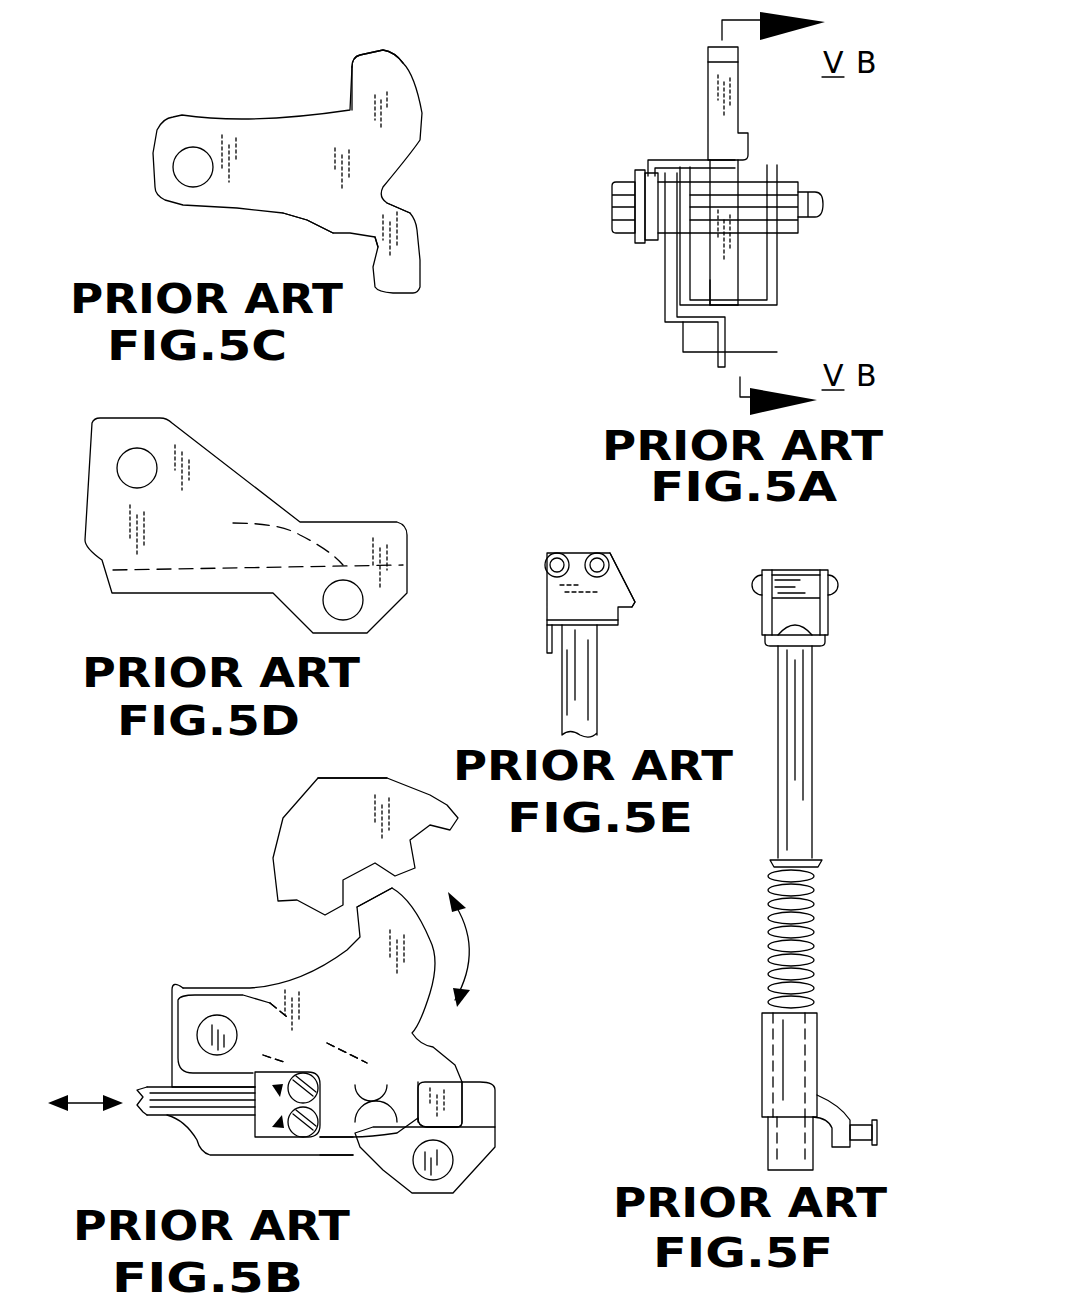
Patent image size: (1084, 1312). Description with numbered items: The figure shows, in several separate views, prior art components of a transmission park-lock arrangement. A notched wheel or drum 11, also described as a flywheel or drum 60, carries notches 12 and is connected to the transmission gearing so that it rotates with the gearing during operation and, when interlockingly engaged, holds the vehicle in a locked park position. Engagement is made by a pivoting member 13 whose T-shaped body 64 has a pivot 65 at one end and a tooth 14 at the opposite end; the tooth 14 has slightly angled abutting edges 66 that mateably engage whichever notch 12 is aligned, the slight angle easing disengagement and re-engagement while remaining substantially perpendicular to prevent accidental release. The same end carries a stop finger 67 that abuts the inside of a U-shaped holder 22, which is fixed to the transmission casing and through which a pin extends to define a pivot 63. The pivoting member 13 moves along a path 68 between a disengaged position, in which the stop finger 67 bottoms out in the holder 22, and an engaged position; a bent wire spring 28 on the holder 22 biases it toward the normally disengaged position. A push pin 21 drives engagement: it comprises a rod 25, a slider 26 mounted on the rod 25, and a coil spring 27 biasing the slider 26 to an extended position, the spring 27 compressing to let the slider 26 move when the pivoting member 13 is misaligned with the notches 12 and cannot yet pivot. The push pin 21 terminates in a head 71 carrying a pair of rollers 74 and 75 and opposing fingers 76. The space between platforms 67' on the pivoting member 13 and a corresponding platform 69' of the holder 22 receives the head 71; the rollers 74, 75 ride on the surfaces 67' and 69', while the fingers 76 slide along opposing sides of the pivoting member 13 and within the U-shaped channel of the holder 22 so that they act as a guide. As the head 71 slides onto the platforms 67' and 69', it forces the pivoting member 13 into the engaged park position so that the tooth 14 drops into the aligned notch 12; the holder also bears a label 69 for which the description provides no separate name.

In FIG. 5B, the notched wheel or drum 11 is at (258, 865).
In FIG. 5B, the notch 12 is at (420, 840).
In FIG. 5A, the pivoting member 13 is at (742, 100).
In FIG. 5B, the pivoting member 13 is at (440, 1003).
In FIG. 5C, the pivoting member 13 is at (435, 110).
In FIG. 5A, the tooth 14 is at (708, 50).
In FIG. 5B, the tooth 14 is at (410, 902).
In FIG. 5C, the tooth 14 is at (378, 68).
In FIG. 5B, the push pin 21 is at (150, 1122).
In FIG. 5E, the push pin 21 is at (550, 699).
In FIG. 5F, the push pin 21 is at (820, 714).
In FIG. 5A, the holder 22 is at (777, 320).
In FIG. 5B, the holder 22 is at (488, 1180).
In FIG. 5D, the holder 22 is at (248, 455).
In FIG. 5F, the rod 25 is at (780, 792).
In FIG. 5F, the slider 26 is at (817, 1060).
In FIG. 5F, the coil spring 27 is at (815, 900).
In FIG. 5A, the second spring 28 is at (668, 157).
In FIG. 5B, the flywheel or notched wheel or drum 60 is at (314, 846).
In FIG. 5B, the pivot 63 is at (437, 1157).
In FIG. 5B, the T-shaped body 64 is at (310, 995).
In FIG. 5C, the T-shaped body 64 is at (270, 177).
In FIG. 5A, the pivot 65 is at (823, 200).
In FIG. 5B, the pivot 65 is at (197, 1036).
In FIG. 5C, the pivot 65 is at (195, 163).
In FIG. 5C, the abutting edges 66 is at (352, 90).
In FIG. 5A, the stop finger 67 is at (791, 264).
In FIG. 5B, the stop finger 67 is at (479, 1080).
In FIG. 5C, the stop finger 67 is at (414, 286).
In FIG. 5B, the platforms 67' is at (375, 1072).
In FIG. 5C, the platforms 67' is at (281, 240).
In FIG. 5B, the path 68 is at (475, 948).
In FIG. 5B, the slot 69 is at (346, 1173).
In FIG. 5D, the platform 69' is at (258, 535).
In FIG. 5B, the head 71 is at (268, 1107).
In FIG. 5E, the head 71 is at (536, 590).
In FIG. 5F, the head 71 is at (840, 611).
In FIG. 5B, the roller 74 is at (302, 1072).
In FIG. 5E, the roller 74 is at (547, 557).
In FIG. 5B, the roller 75 is at (298, 1130).
In FIG. 5E, the roller 75 is at (597, 553).
In FIG. 5F, the roller 75 is at (793, 567).
In FIG. 5B, the opposing fingers 76 is at (265, 1052).
In FIG. 5E, the opposing fingers 76 is at (635, 605).